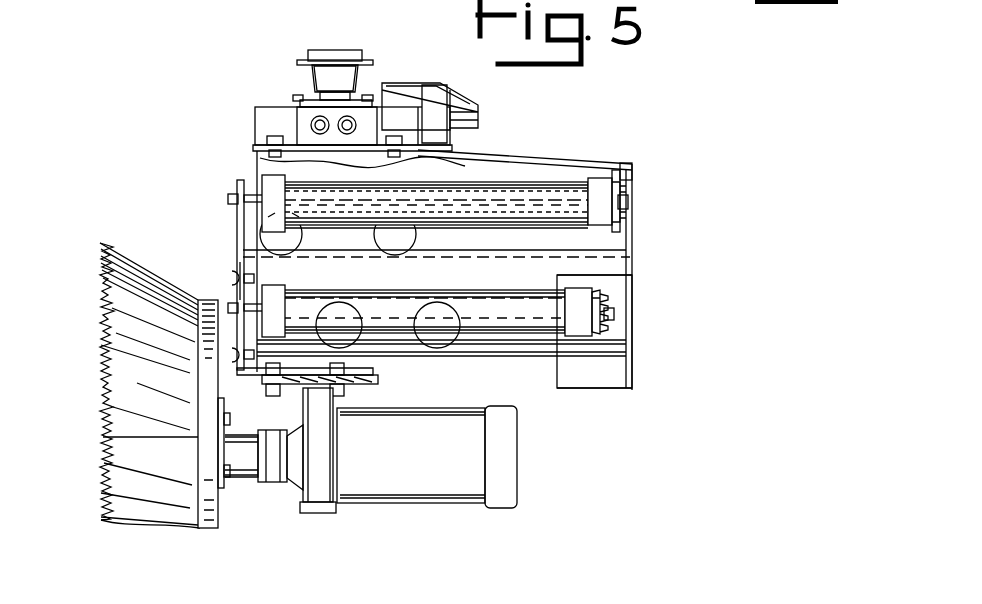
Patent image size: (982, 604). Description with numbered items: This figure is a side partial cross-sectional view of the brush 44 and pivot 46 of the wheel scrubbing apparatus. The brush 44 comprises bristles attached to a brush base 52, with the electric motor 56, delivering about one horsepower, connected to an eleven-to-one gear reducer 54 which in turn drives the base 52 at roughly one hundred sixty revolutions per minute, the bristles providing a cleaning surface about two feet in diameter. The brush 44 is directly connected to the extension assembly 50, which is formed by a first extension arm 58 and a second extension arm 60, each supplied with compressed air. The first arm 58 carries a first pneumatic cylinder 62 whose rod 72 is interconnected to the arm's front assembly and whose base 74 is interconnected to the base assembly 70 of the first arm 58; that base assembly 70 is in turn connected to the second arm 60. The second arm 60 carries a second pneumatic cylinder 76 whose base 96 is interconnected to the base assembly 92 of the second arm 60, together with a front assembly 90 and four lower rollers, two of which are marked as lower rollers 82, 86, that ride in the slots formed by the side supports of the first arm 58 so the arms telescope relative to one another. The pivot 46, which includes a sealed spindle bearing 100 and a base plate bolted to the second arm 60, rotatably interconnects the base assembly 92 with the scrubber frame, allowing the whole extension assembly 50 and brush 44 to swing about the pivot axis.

The brush 44 is at (125, 186).
The pivot 46 is at (372, 40).
The extension assembly 50 is at (805, 239).
The brush base 52 is at (205, 300).
The gear reducer 54 is at (277, 480).
The electric motor 56 is at (508, 458).
The first extension arm 58 is at (722, 333).
The second extension arm 60 is at (702, 196).
The first pneumatic cylinder 62 is at (546, 317).
The base assembly 70 is at (640, 349).
The rod 72 is at (258, 286).
The base 74 is at (580, 296).
The second pneumatic cylinder 76 is at (545, 190).
The lower roller 82 is at (373, 353).
The lower roller 86 is at (450, 346).
The front assembly 90 is at (237, 188).
The base assembly 92 is at (640, 182).
The base 96 is at (607, 174).
The sealed spindle bearing 100 is at (322, 75).